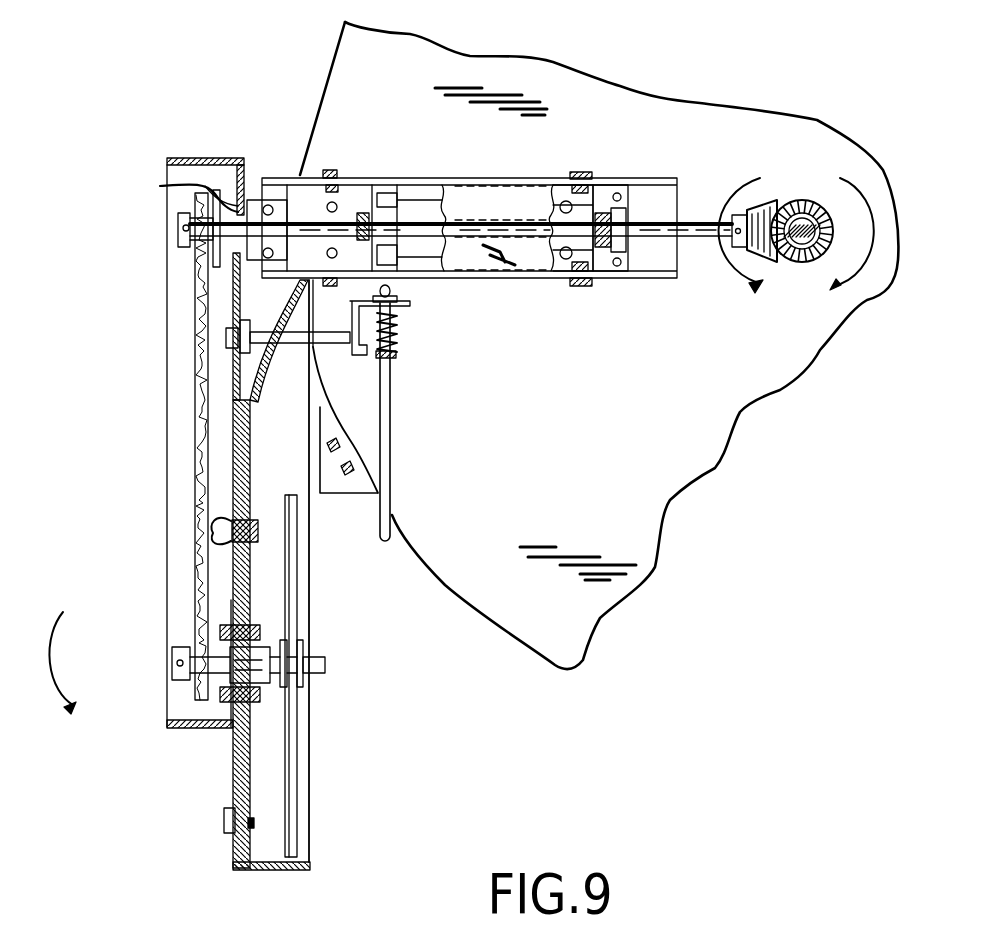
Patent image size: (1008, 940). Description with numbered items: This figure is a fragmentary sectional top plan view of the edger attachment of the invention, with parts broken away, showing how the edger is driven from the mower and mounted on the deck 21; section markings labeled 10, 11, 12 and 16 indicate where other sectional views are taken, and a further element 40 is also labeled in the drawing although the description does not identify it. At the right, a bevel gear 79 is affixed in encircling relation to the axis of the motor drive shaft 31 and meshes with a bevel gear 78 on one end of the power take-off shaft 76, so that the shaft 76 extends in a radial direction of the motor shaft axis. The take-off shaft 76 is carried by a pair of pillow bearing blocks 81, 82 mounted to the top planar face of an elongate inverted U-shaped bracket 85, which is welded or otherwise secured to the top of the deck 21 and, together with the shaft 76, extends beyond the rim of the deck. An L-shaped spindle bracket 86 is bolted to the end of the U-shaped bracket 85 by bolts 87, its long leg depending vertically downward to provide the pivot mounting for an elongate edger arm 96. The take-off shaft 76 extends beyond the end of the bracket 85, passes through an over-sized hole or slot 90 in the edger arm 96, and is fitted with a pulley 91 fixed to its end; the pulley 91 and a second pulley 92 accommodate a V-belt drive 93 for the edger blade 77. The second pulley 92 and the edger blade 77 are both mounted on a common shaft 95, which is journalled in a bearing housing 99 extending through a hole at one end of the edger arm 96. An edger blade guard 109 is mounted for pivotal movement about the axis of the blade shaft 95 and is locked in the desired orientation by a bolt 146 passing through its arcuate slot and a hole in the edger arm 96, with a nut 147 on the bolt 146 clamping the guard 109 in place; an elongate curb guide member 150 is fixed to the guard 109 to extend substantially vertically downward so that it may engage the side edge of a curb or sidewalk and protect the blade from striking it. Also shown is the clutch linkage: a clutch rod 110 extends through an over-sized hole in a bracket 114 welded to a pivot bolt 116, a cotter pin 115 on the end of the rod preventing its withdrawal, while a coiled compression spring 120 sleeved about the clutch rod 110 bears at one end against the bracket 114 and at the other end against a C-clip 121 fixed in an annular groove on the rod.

The section line 10- 10 is at (221, 605).
The section line 11- 11 is at (660, 116).
The section line 12- 12 is at (253, 285).
The section line 16- 16 is at (137, 93).
The deck 21 is at (498, 495).
The motor drive shaft 31 is at (807, 241).
The bracket 40 is at (333, 463).
The power take-off shaft 76 is at (556, 217).
The edger blade 77 is at (297, 797).
The bevel gear 78 is at (767, 258).
The bevel gear 79 is at (795, 200).
The pillow bearing block 81 is at (598, 248).
The pillow bearing block 82 is at (398, 193).
The U-shaped bracket 85 is at (427, 215).
The L-shaped spindle bracket 86 is at (288, 200).
The bolts 87 is at (268, 208).
The over-sized hole or slot 90 is at (160, 186).
The pulley 91 is at (178, 257).
The second pulley 92 is at (195, 635).
The V-belt drive 93 is at (195, 405).
The shaft 95 is at (172, 663).
The edger arm 96 is at (167, 160).
The bearing housing 99 is at (262, 683).
The edger blade guard 109 is at (233, 775).
The clutch rod 110 is at (392, 415).
The bracket 114 is at (406, 303).
The cotter pin 115 is at (395, 293).
The pivot bolt 116 is at (290, 345).
The coiled compression spring 120 is at (392, 348).
The C-clip 121 is at (390, 355).
The bolt 146 is at (258, 523).
The nut 147 is at (212, 540).
The curb guide member 150 is at (233, 842).